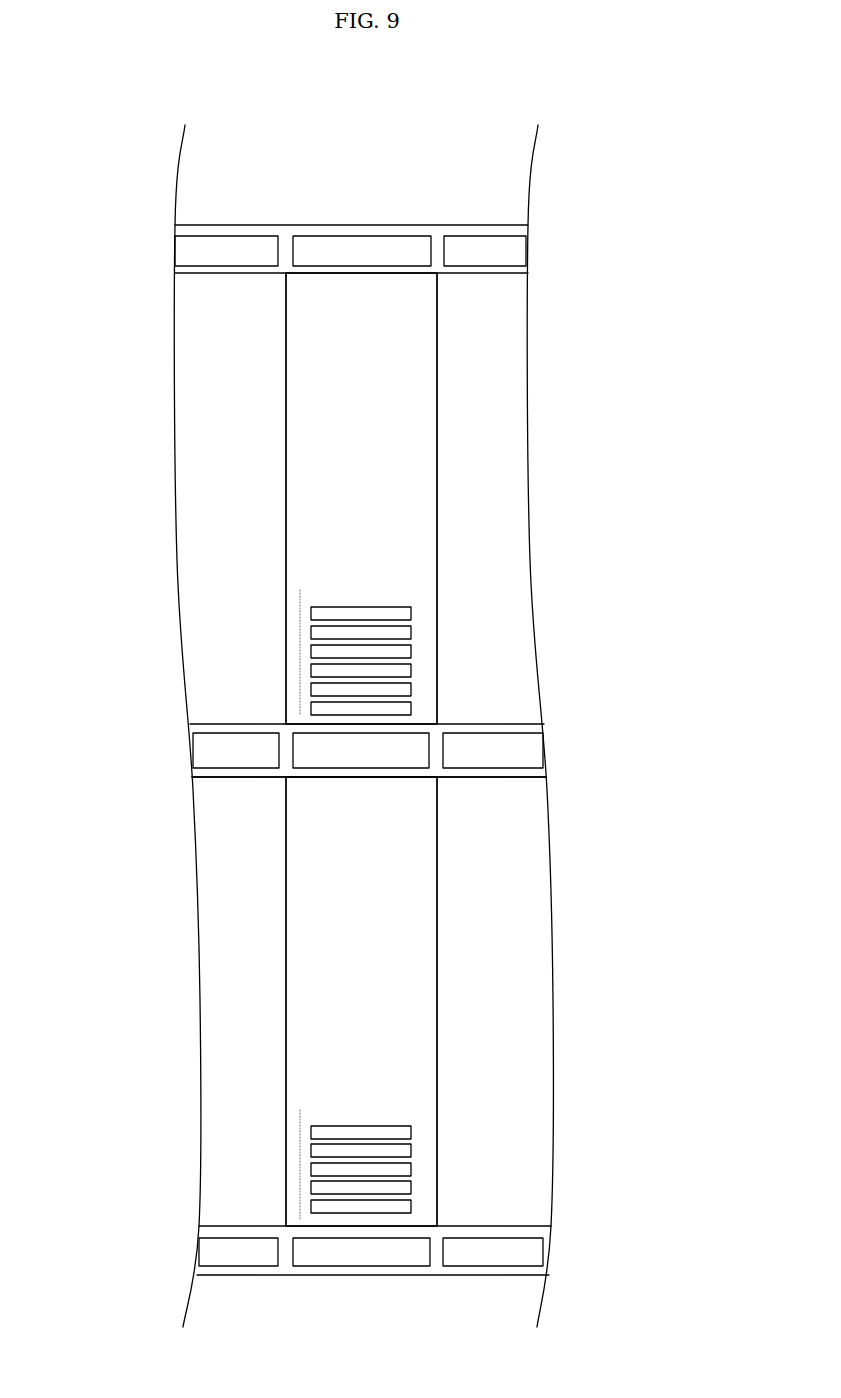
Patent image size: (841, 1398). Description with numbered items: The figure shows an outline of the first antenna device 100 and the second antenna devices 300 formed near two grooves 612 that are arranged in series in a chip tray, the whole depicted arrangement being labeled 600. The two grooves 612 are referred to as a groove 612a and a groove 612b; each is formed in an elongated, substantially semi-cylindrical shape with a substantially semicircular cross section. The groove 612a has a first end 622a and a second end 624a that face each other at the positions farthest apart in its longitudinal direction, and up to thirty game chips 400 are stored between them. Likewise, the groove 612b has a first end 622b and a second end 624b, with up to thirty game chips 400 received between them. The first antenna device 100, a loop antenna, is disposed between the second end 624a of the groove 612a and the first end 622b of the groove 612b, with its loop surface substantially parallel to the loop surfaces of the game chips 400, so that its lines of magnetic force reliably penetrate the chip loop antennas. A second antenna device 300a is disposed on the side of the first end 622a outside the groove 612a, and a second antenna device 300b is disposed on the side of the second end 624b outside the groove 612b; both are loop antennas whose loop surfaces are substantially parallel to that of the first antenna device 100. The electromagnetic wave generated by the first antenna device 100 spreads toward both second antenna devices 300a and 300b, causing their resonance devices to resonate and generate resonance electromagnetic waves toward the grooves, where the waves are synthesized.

The display device / flexible substrate strip 600 is at (436, 119).
The second antenna device 300 is at (192, 247).
The second antenna device 300a is at (317, 252).
The second antenna device 300b is at (340, 1252).
The first end 622a is at (400, 275).
The first end 622b is at (400, 778).
The second end 624a is at (413, 725).
The second end 624b is at (420, 1225).
The groove 612 is at (203, 443).
The groove 612a is at (367, 405).
The groove 612b is at (388, 902).
The game chip 400 is at (297, 622).
The first antenna device 100 is at (230, 742).